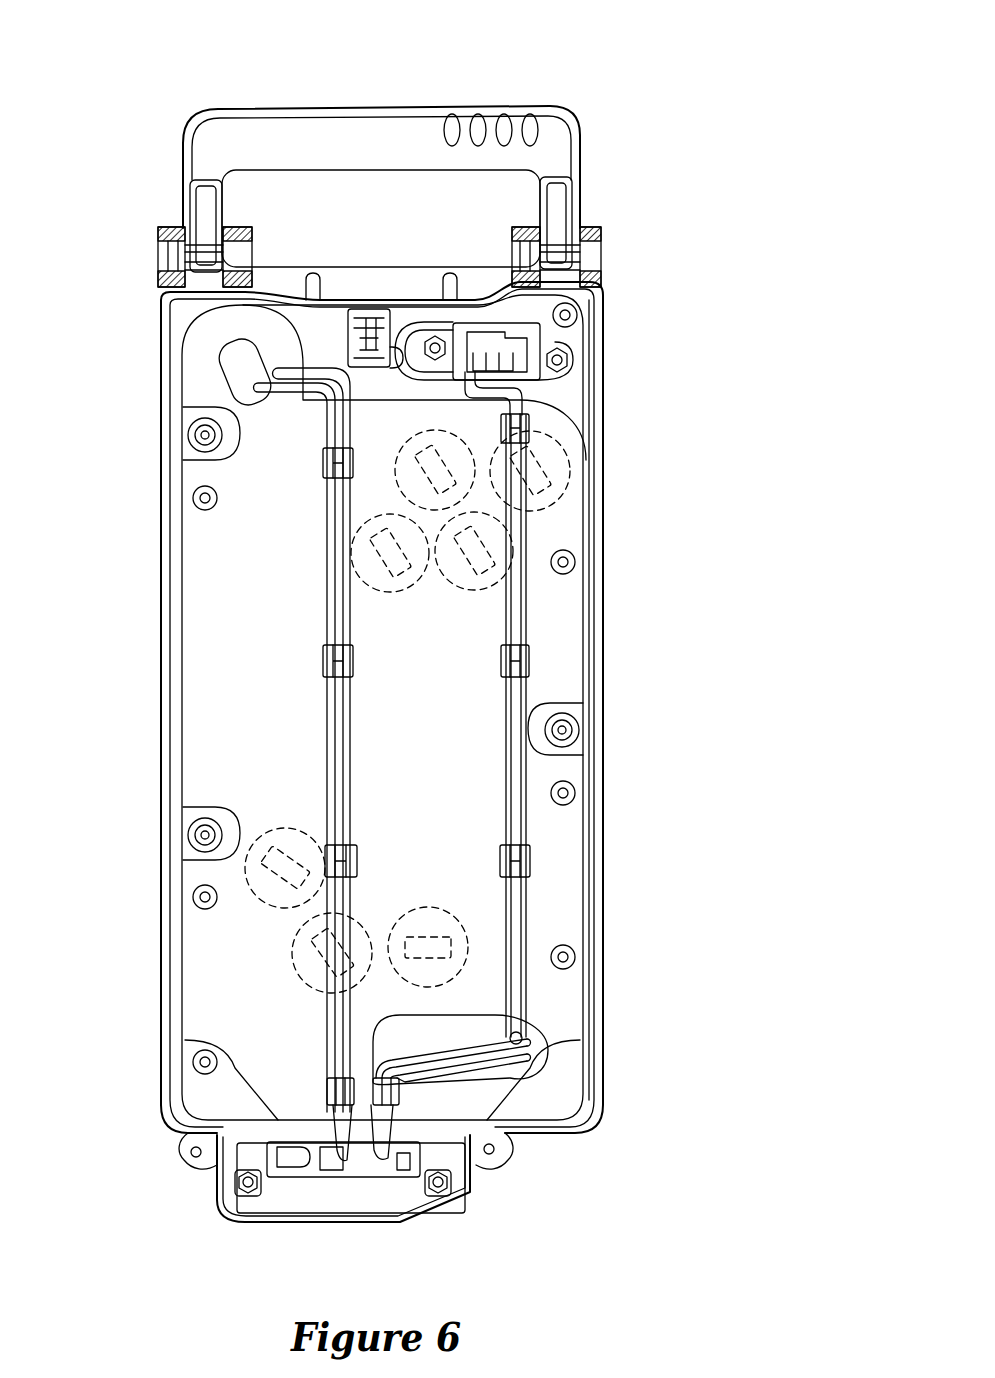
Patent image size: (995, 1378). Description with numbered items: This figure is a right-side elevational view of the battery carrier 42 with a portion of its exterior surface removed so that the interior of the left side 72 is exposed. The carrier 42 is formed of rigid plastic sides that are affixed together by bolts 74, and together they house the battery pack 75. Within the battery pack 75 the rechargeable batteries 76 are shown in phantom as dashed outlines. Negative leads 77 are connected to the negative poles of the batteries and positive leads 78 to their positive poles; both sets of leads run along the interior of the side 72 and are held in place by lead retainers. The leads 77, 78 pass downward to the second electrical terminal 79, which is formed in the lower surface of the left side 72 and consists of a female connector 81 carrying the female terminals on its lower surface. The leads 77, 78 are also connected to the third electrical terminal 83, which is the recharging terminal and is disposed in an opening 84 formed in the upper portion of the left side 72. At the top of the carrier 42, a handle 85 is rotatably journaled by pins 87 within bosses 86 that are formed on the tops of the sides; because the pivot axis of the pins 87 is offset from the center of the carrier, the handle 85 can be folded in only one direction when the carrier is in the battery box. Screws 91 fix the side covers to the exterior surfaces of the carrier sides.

The battery carrier 42 is at (576, 92).
The left side 72 is at (607, 452).
The bolts 74 is at (188, 440).
The battery pack 75 is at (582, 431).
The rechargeable batteries 76 is at (560, 505).
The negative leads 77 is at (327, 720).
The positive leads 78 is at (360, 372).
The second electrical terminal 79 is at (481, 1206).
The female connector 81 is at (337, 1200).
The third electrical terminal 83 is at (525, 342).
The opening 84 is at (541, 380).
The handle 85 is at (343, 107).
The bosses 86 is at (226, 232).
The pins 87 is at (234, 240).
The screws 91 is at (580, 306).